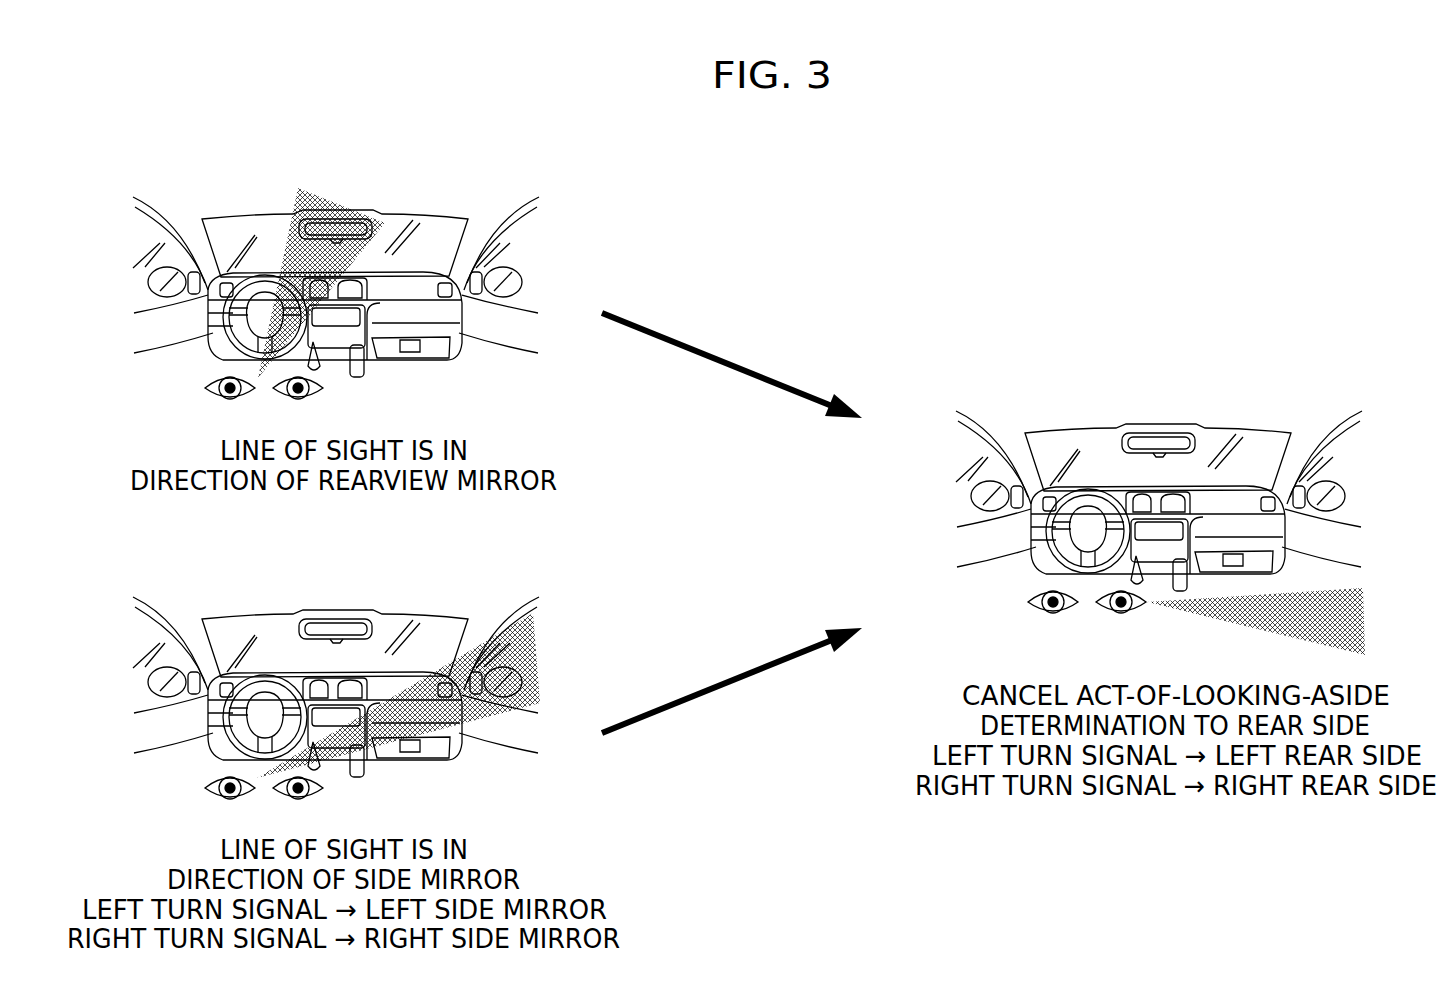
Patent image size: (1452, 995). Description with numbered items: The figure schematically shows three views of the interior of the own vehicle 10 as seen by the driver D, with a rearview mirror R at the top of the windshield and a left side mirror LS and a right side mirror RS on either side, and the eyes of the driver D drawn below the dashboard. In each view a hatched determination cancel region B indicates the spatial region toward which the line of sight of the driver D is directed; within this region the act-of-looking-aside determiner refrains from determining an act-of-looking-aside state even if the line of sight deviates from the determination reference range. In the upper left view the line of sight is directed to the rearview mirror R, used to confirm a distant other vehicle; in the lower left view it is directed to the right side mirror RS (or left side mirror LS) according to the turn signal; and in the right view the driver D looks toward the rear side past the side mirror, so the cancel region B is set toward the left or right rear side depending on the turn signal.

The own vehicle 10 is at (461, 184).
The rearview mirror R is at (343, 226).
The left side mirror LS is at (148, 277).
The right side mirror RS is at (524, 277).
The determination cancel region B is at (300, 188).
The driver D is at (201, 413).